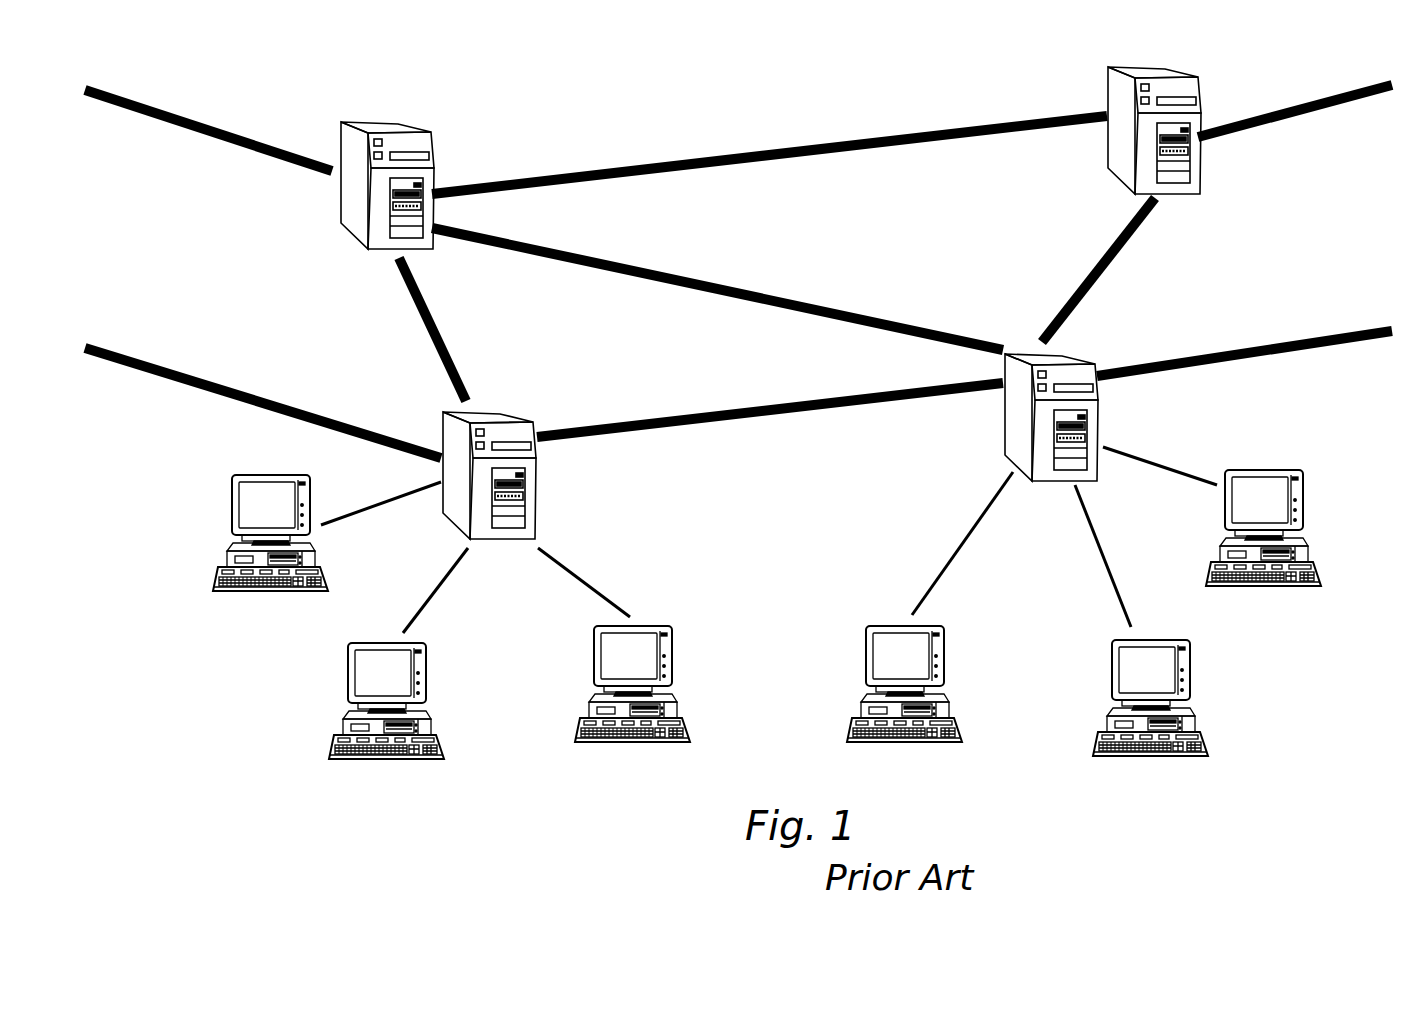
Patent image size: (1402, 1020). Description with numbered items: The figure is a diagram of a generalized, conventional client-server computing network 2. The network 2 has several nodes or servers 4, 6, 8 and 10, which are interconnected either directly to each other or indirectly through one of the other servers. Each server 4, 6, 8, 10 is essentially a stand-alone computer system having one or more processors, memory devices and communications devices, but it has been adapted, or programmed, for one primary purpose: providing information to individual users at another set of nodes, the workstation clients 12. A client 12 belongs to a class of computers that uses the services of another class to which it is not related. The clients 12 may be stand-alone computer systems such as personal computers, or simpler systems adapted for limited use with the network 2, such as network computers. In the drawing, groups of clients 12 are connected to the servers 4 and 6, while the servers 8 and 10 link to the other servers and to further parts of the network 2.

The client-server computing network 2 is at (258, 752).
The server 4 is at (530, 482).
The server 6 is at (1018, 419).
The server 8 is at (350, 189).
The server 10 is at (1118, 64).
The workstation client 12 is at (405, 766).